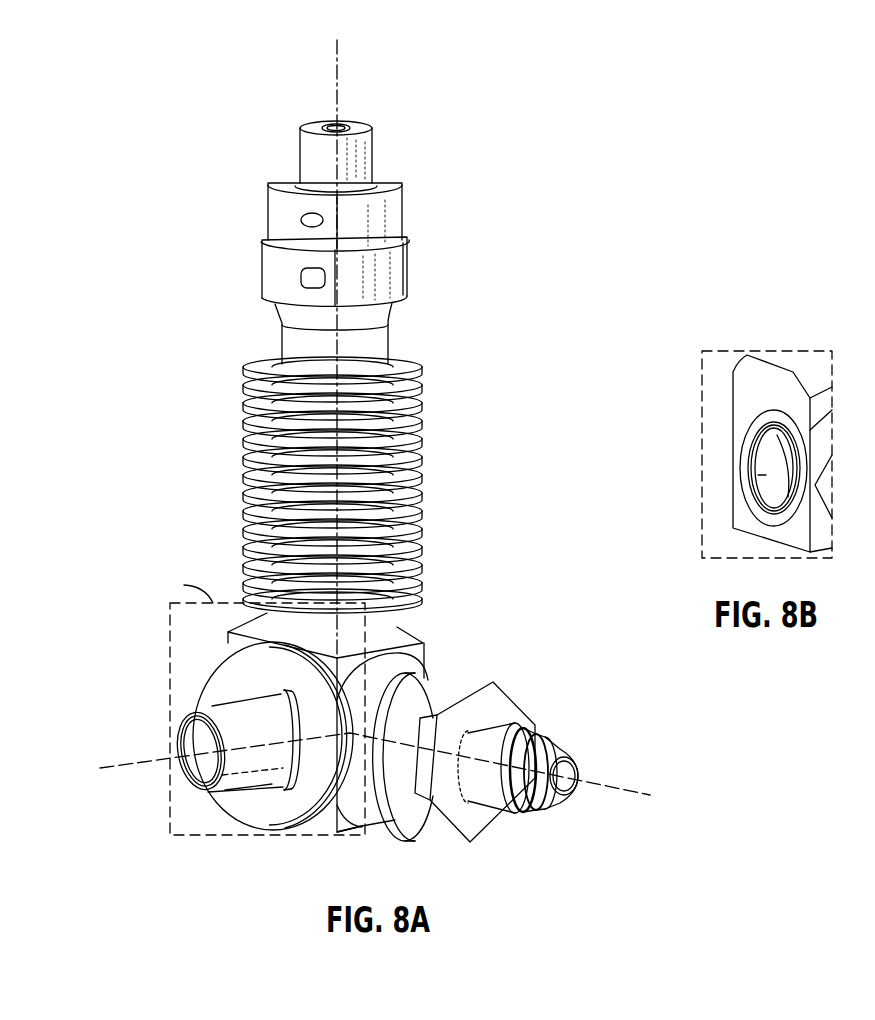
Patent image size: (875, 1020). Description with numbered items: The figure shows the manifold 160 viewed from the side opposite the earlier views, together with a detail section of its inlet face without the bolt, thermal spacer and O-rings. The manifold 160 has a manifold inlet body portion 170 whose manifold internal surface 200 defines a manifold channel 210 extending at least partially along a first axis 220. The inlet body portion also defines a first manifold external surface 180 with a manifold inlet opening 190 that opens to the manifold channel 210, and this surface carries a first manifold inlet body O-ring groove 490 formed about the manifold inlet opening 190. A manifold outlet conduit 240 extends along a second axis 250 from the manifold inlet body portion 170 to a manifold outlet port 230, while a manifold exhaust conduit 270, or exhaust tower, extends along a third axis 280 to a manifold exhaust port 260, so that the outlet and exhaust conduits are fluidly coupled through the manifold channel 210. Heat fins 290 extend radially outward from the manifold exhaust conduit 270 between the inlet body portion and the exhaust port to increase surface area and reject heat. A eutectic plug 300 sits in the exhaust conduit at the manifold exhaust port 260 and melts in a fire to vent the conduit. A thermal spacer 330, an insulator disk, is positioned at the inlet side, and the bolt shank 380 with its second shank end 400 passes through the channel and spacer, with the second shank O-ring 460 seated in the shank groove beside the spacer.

In FIG. 8A, the manifold 160 is at (476, 141).
In FIG. 8A, the manifold inlet body portion 170 is at (408, 630).
In FIG. 8A, the first manifold external surface 180 is at (252, 607).
In FIG. 8B, the first manifold external surface 180 is at (747, 395).
In FIG. 8B, the manifold inlet opening 190 is at (763, 443).
In FIG. 8B, the manifold internal surface 200 is at (763, 490).
In FIG. 8B, the manifold channel 210 is at (762, 474).
In FIG. 8A, the first axis 220 is at (123, 767).
In FIG. 8A, the manifold outlet port 230 is at (444, 660).
In FIG. 8A, the manifold outlet conduit 240 is at (350, 830).
In FIG. 8A, the second axis 250 is at (600, 783).
In FIG. 8A, the manifold exhaust port 260 is at (262, 277).
In FIG. 8A, the manifold exhaust conduit 270 is at (389, 337).
In FIG. 8A, the third axis 280 is at (333, 87).
In FIG. 8A, the heat fins 290 is at (424, 500).
In FIG. 8A, the plug 300 is at (345, 120).
In FIG. 8A, the thermal spacer 330 is at (218, 655).
In FIG. 8A, the bolt shank 380 is at (207, 697).
In FIG. 8A, the second shank end 400 is at (213, 793).
In FIG. 8A, the second shank O-ring 460 is at (250, 778).
In FIG. 8B, the first manifold inlet body O-ring groove 490 is at (772, 522).